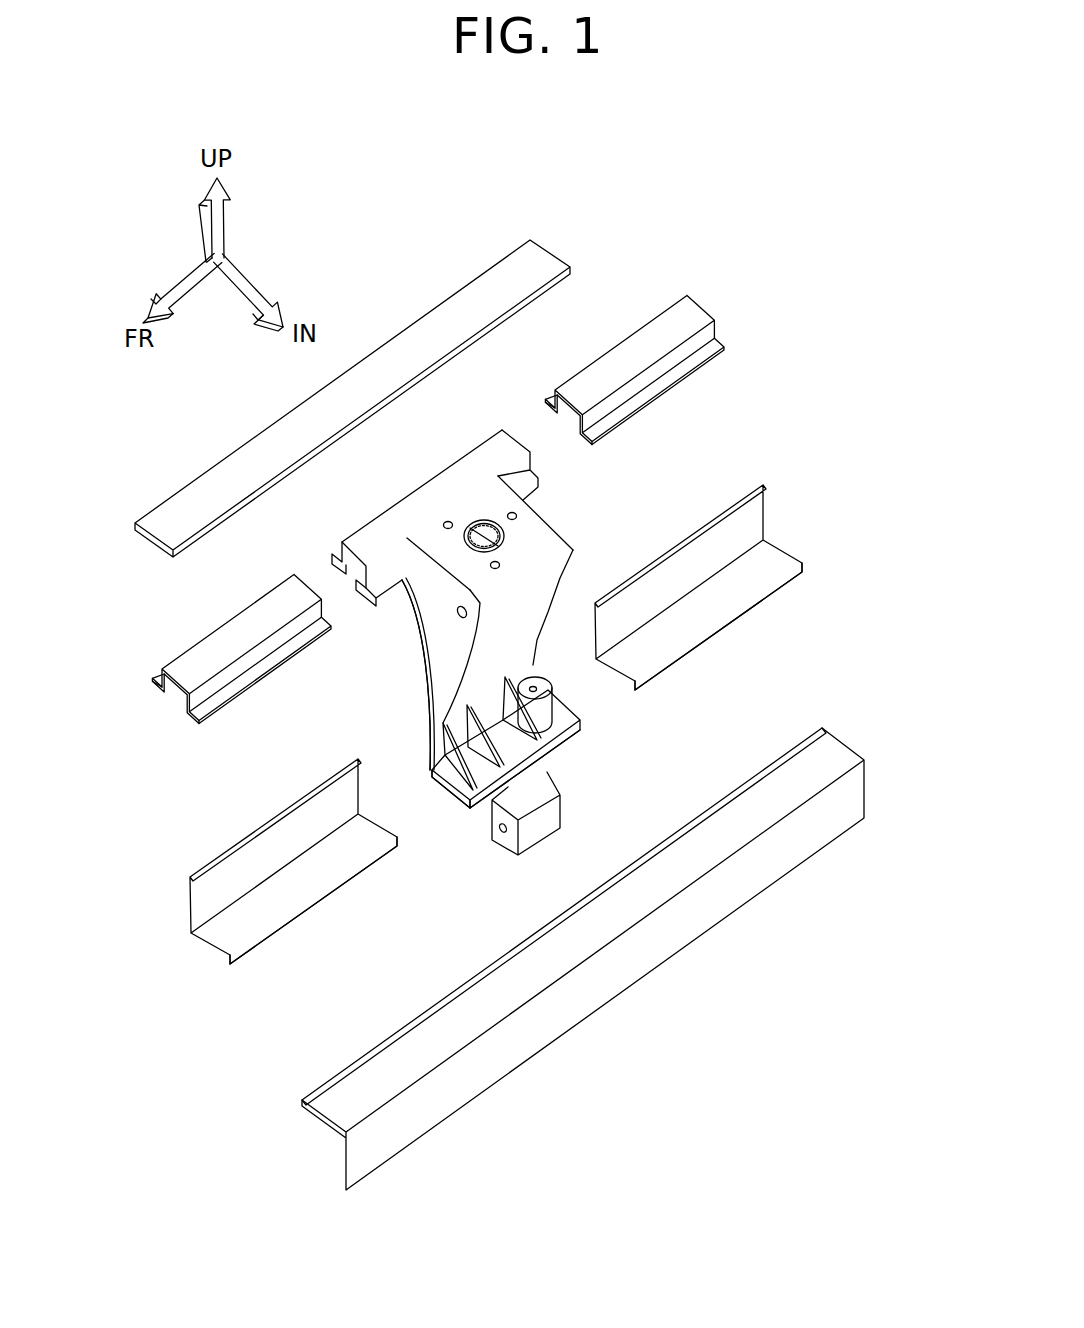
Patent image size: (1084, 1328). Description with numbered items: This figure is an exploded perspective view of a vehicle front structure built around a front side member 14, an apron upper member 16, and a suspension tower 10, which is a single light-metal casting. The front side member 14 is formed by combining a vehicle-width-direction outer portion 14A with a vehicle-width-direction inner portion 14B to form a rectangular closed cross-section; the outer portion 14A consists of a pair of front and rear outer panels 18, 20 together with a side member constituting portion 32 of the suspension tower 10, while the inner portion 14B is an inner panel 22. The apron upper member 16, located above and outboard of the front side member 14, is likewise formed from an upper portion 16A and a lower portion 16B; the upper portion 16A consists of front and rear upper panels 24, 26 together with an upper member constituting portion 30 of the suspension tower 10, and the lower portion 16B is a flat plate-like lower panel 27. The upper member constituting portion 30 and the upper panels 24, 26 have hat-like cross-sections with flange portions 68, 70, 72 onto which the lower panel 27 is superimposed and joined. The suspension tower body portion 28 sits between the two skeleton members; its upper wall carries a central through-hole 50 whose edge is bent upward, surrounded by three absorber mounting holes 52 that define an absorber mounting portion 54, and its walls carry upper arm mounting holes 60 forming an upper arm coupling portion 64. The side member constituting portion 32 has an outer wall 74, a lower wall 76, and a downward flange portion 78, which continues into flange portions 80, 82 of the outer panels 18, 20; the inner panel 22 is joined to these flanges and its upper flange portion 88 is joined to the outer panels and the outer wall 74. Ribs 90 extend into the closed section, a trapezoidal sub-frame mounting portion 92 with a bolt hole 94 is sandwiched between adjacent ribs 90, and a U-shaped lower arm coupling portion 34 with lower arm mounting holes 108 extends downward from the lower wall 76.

The suspension tower 10 is at (588, 538).
The front side member 14 is at (845, 474).
The vehicle-width-direction outer portion 14A is at (791, 540).
The vehicle-width-direction inner portion 14B is at (851, 722).
The apron upper member 16 is at (815, 266).
The upper portion 16A is at (732, 316).
The lower portion 16B is at (590, 246).
The front outer panel 18 is at (257, 830).
The rear outer panel 20 is at (703, 525).
The inner panel 22 is at (618, 1002).
The front upper panel 24 is at (232, 633).
The rear upper panel 26 is at (628, 356).
The lower panel 27 is at (402, 333).
The suspension tower body portion 28 is at (565, 580).
The upper member constituting portion 30 is at (404, 497).
The side member constituting portion 32 is at (427, 741).
The lower arm coupling portion 34 is at (562, 808).
The through-hole 50 is at (480, 520).
The absorber mounting holes 52 is at (446, 521).
The absorber mounting portion 54 is at (485, 510).
The upper arm mounting holes 60 is at (442, 656).
The upper arm coupling portion 64 is at (453, 613).
The flange portions 68 is at (536, 474).
The flange portions 70 is at (150, 692).
The flange portions 72 is at (545, 402).
The vehicle-width-direction outer wall 74 is at (427, 730).
The lower wall 76 is at (448, 793).
The flange portion 78 is at (468, 808).
The flange portion 80 is at (308, 911).
The flange portion 82 is at (720, 631).
The flange portion 88 is at (486, 968).
The ribs 90 is at (447, 786).
The sub-frame mounting portion 92 is at (545, 711).
The bolt hole 94 is at (537, 684).
The lower arm mounting holes 108 is at (500, 834).